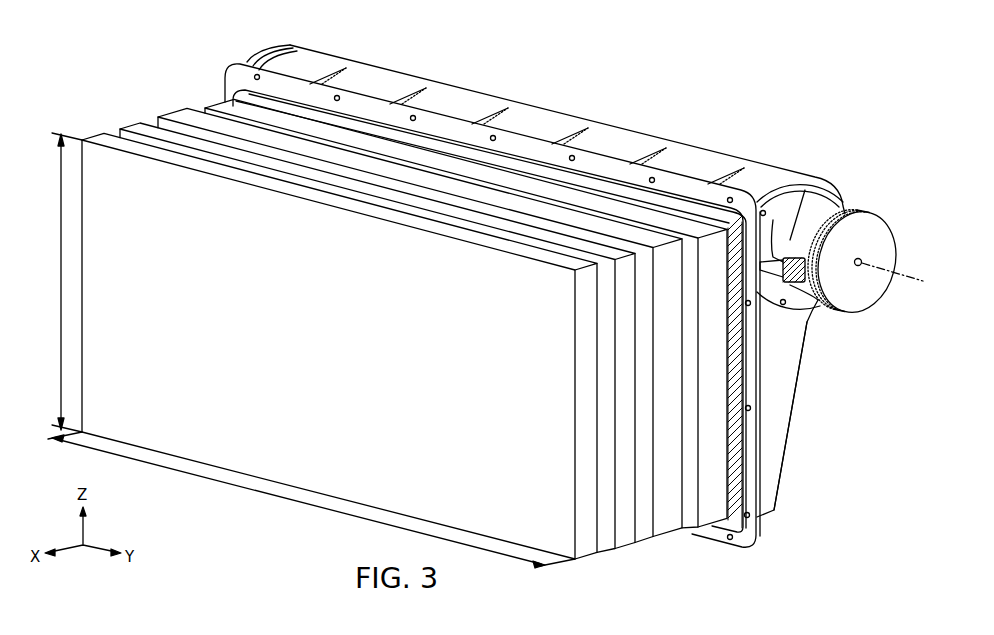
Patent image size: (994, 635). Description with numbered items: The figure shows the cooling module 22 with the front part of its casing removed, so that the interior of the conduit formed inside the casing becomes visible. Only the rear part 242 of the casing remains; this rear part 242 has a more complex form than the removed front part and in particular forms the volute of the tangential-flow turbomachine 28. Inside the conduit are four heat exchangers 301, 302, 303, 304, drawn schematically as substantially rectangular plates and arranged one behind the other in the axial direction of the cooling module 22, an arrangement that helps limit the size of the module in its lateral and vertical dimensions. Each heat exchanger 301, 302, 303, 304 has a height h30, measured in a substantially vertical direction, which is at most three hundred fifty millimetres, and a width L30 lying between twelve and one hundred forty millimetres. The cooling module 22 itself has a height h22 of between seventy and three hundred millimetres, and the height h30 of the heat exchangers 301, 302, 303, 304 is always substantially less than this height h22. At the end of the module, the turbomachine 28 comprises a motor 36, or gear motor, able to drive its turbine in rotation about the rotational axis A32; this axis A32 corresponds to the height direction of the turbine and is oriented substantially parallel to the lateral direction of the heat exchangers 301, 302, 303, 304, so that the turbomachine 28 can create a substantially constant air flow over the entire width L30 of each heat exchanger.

The cooling module 22 is at (497, 282).
The rear part of the casing 242 is at (567, 129).
The tangential-flow turbomachine 28 is at (849, 348).
The motor 36 is at (877, 229).
The rotational axis of the turbine A32 is at (893, 299).
The first heat exchanger 301 is at (350, 369).
The second heat exchanger 302 is at (388, 360).
The third heat exchanger 303 is at (428, 347).
The fourth heat exchanger 304 is at (472, 341).
The height of the cooling module h22 is at (782, 412).
The height of the heat exchangers h30 is at (56, 282).
The width of the heat exchangers L30 is at (311, 500).